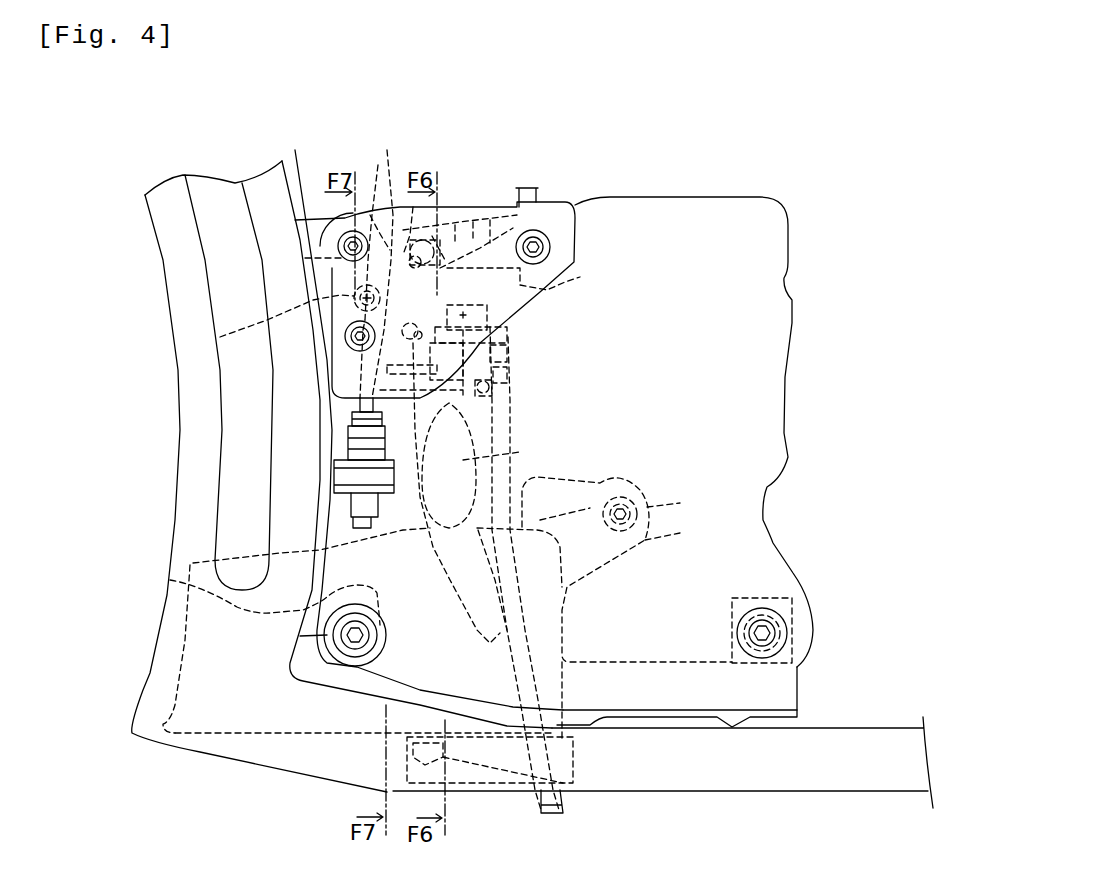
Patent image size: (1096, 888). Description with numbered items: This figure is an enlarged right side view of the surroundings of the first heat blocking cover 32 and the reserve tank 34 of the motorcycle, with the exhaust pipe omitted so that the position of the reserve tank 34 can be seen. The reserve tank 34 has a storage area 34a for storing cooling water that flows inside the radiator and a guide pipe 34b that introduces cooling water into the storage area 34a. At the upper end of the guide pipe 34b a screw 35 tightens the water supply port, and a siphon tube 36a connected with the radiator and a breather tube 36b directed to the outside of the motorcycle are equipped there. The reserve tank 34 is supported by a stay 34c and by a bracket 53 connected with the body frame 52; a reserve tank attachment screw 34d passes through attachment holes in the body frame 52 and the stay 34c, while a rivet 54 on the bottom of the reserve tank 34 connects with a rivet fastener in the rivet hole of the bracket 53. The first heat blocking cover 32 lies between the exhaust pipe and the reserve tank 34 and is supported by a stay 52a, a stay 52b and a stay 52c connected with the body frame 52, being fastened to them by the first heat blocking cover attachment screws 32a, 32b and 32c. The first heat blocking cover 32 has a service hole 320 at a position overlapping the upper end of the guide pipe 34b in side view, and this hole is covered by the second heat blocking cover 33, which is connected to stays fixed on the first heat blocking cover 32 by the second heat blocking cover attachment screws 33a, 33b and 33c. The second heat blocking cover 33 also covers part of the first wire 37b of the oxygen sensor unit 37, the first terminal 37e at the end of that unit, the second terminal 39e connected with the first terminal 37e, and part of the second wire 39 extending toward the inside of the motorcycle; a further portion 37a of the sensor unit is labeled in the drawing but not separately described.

The first heat blocking cover 32 is at (790, 336).
The first heat blocking cover attachment screw 32a is at (770, 630).
The first heat blocking cover attachment screw 32b is at (300, 667).
The first heat blocking cover attachment screw 32c is at (220, 337).
The second heat blocking cover 33 is at (578, 203).
The second heat blocking cover attachment screw 33a is at (535, 240).
The second heat blocking cover attachment screw 33b is at (350, 336).
The second heat blocking cover attachment screw 33c is at (355, 238).
The reserve tank 34 is at (597, 587).
The storage area 34a is at (537, 477).
The guide pipe 34b is at (520, 452).
The stay 34c is at (652, 540).
The reserve tank attachment screw 34d is at (640, 512).
The screw 35 is at (492, 393).
The siphon tube 36a is at (427, 340).
The breather tube 36b is at (548, 810).
The O2 sensor unit 37 is at (244, 336).
The sensor body 37a is at (340, 468).
The first wire 37b is at (358, 408).
The first terminal 37e is at (391, 185).
The second wire 39 is at (527, 187).
The second terminal 39e is at (462, 220).
The service hole 320 is at (583, 278).
The body frame 52 is at (182, 306).
The stay 52a is at (792, 688).
The stay 52b is at (170, 580).
The stay 52c is at (420, 418).
The bracket 53 is at (505, 780).
The rivet 54 is at (447, 775).